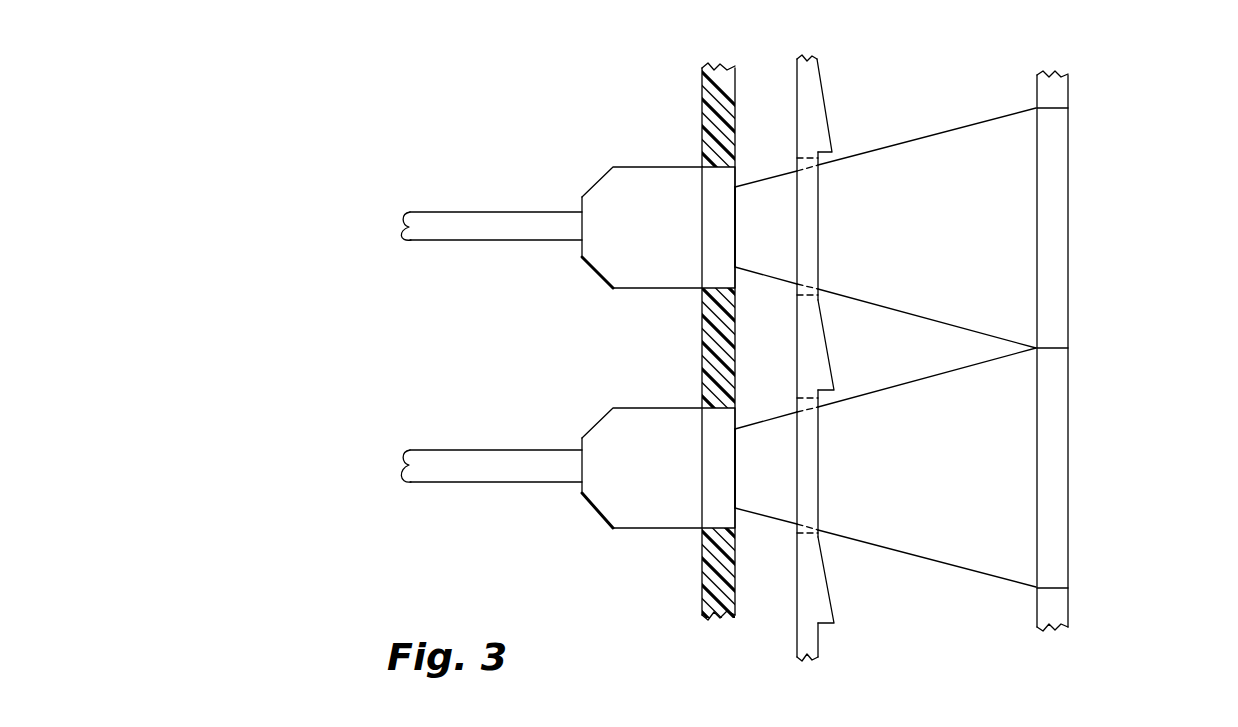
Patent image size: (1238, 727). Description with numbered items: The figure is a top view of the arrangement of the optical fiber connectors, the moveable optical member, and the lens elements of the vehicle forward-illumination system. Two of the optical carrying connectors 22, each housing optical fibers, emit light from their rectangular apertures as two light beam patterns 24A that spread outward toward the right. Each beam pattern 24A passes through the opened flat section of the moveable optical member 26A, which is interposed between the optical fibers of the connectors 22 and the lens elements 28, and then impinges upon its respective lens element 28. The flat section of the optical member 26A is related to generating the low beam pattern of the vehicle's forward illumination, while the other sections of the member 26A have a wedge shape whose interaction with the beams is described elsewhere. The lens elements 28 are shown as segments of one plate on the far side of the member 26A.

The optical connector 22 is at (573, 113).
The light beam pattern 24A is at (918, 380).
The optical member 26A is at (837, 82).
The lens element 28 is at (1148, 147).